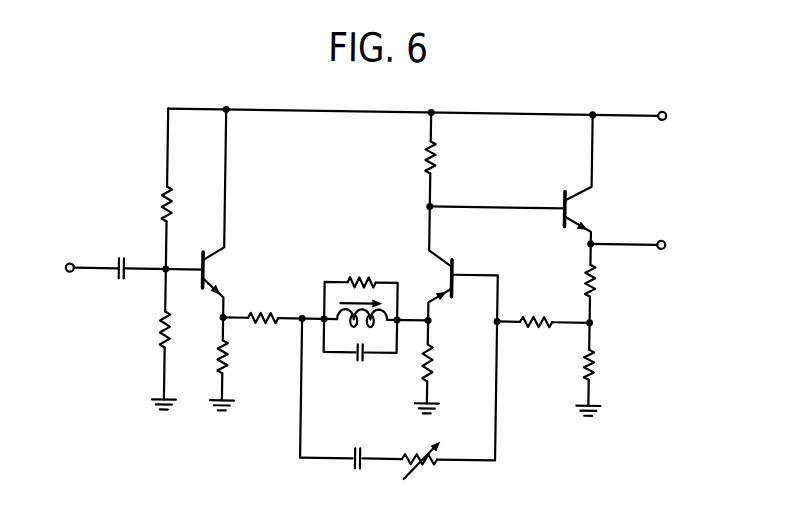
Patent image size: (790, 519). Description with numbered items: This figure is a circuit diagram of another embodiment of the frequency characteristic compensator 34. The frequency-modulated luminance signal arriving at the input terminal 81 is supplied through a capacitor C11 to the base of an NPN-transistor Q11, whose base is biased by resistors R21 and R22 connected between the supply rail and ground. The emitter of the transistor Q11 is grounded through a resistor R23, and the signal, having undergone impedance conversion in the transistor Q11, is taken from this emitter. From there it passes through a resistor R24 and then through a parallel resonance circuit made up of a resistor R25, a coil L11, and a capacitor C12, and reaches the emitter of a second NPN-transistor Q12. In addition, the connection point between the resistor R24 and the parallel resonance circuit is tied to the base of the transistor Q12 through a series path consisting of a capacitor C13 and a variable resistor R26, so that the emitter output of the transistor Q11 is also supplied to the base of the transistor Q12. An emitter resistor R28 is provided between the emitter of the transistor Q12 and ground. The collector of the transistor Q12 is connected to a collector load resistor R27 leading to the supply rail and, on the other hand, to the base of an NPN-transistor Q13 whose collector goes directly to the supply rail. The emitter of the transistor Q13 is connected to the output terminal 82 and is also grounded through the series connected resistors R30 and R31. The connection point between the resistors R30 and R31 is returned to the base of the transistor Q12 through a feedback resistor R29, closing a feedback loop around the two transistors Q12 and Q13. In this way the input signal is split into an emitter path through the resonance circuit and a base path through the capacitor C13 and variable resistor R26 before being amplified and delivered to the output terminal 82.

The frequency characteristic compensator 34 is at (507, 102).
The input terminal 81 is at (70, 268).
The output terminal 82 is at (661, 236).
The capacitor C11 is at (126, 257).
The capacitor C12 is at (365, 365).
The capacitor C13 is at (363, 446).
The coil L11 is at (339, 310).
The NPN-transistor Q11 is at (229, 225).
The NPN-transistor Q12 is at (457, 262).
The NPN-transistor Q13 is at (593, 189).
The resistor R21 is at (184, 204).
The resistor R22 is at (182, 329).
The resistor R23 is at (237, 375).
The resistor R24 is at (263, 307).
The resistor R25 is at (363, 270).
The variable resistor R26 is at (430, 467).
The collector load resistor R27 is at (449, 159).
The emitter resistor R28 is at (442, 379).
The feedback resistor R29 is at (543, 312).
The resistor R30 is at (607, 308).
The resistor R31 is at (603, 383).